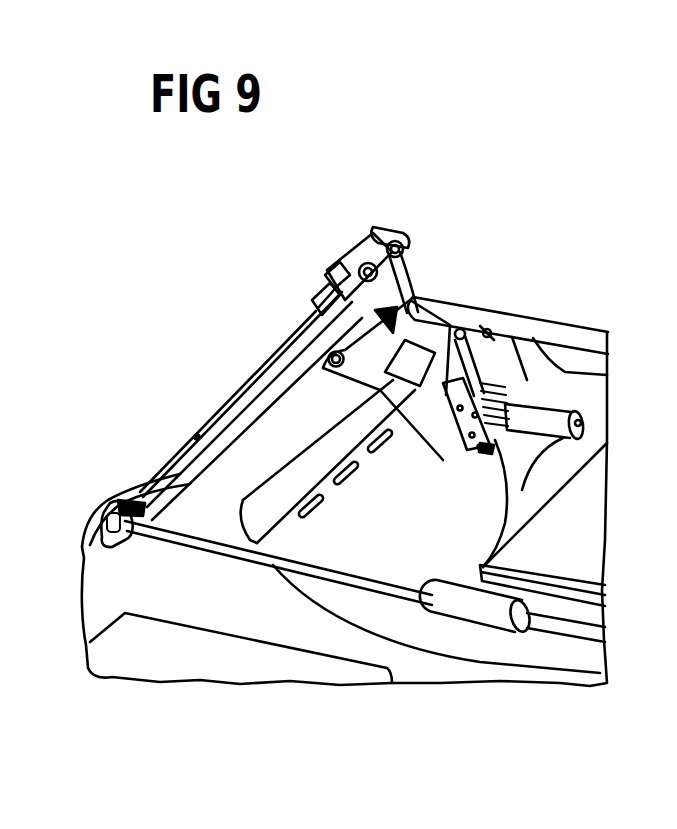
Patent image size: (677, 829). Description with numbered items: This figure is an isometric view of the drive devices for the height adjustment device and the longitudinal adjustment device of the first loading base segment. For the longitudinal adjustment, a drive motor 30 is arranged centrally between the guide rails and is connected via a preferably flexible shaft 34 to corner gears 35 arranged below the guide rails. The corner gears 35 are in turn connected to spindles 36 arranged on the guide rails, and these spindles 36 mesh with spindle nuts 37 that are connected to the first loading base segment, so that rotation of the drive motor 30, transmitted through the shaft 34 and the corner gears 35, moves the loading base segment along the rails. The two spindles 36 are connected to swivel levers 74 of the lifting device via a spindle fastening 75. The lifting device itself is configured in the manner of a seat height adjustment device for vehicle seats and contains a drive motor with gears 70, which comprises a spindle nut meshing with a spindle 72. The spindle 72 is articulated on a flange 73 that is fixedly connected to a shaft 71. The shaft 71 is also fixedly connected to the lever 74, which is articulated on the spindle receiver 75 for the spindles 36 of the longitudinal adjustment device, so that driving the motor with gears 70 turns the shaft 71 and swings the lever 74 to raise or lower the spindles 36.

The drive motor 30 is at (480, 607).
The flexible shaft 34 is at (265, 558).
The corner gears 35 is at (110, 497).
The spindles 36 is at (223, 404).
The spindle nuts 37 is at (314, 262).
The drive motor with gears 70 is at (557, 408).
The shaft 71 is at (543, 328).
The spindle 72 is at (489, 330).
The flange 73 is at (467, 310).
The swivel lever 74 is at (414, 278).
The spindle fastening 75 is at (389, 227).